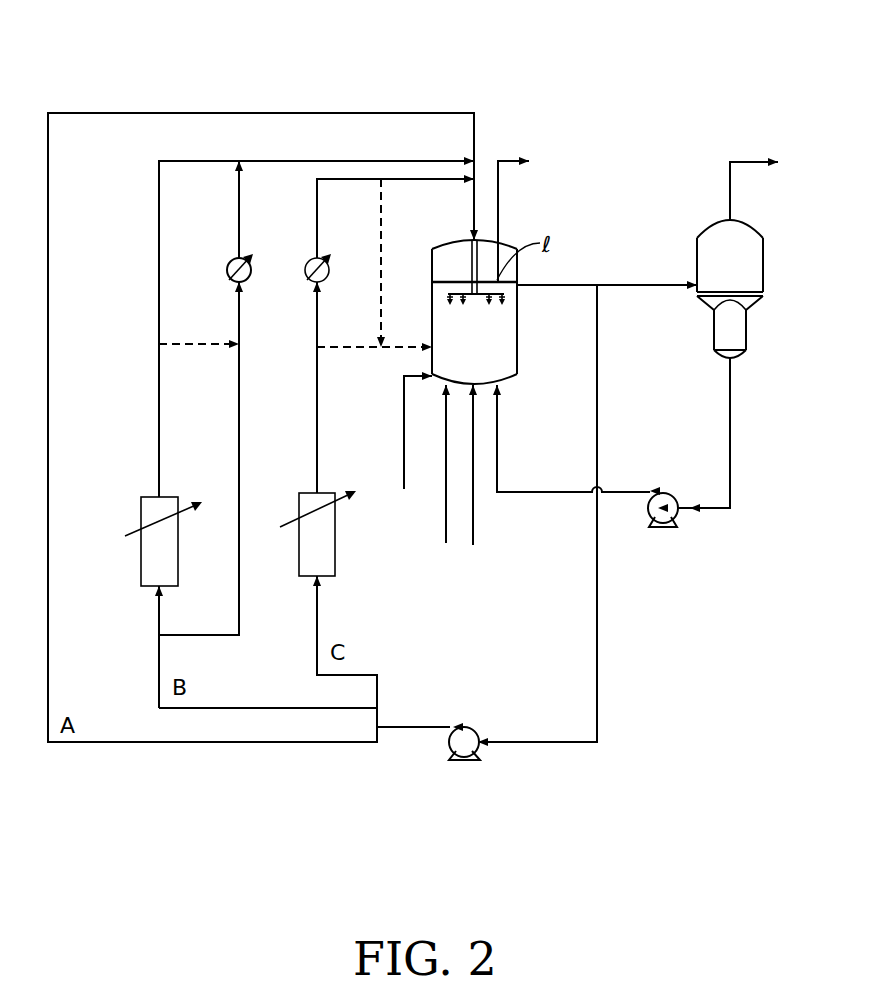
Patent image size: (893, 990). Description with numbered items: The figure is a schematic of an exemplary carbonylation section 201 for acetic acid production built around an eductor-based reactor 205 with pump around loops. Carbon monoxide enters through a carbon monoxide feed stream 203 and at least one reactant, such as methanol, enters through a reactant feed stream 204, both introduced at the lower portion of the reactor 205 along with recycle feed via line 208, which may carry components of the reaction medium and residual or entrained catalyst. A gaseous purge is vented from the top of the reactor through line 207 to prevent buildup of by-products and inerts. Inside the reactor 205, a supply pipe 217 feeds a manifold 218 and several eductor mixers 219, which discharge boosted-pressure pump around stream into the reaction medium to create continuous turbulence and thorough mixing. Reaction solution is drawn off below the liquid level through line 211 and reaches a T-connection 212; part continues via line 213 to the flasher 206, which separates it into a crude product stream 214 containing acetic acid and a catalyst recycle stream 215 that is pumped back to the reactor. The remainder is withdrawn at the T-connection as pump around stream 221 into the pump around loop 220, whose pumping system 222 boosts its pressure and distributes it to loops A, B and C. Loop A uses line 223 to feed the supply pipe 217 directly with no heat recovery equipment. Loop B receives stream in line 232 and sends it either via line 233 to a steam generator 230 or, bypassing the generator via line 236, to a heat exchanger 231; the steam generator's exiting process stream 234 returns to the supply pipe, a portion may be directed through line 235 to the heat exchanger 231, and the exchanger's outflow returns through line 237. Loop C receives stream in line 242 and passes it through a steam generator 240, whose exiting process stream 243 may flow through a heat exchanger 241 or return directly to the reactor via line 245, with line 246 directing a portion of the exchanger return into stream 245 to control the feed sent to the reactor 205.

The carbonylation section 201 is at (628, 115).
The carbon monoxide feed stream 203 is at (400, 520).
The reactant feed stream 204 is at (435, 575).
The eductor-based reactor 205 is at (505, 355).
The flasher 206 is at (752, 270).
The gaseous purge vent line 207 is at (498, 206).
The recycle feed stream line 208 is at (474, 530).
The reaction solution withdrawal line 211 is at (597, 283).
The T-connection 212 is at (600, 290).
The flasher feed line 213 is at (645, 283).
The crude product stream 214 is at (730, 190).
The catalyst recycle stream 215 is at (730, 428).
The supply pipe 217 is at (466, 265).
The manifold 218 is at (455, 292).
The eductor mixers 219 is at (449, 305).
The pump around loop 220 is at (539, 679).
The pump around stream line 221 is at (598, 638).
The pumping system 222 is at (467, 760).
The loop A line 223 is at (153, 742).
The steam generator 230 is at (160, 543).
The heat exchanger 231 is at (252, 270).
The loop B line 232 is at (242, 707).
The steam generator feed line 233 is at (159, 614).
The exiting process stream 234 is at (159, 300).
The heat exchanger bypass feed line 235 is at (196, 348).
The steam generator bypass line 236 is at (239, 452).
The heat exchanger outflow line 237 is at (239, 212).
The steam generator 240 is at (307, 558).
The heat exchanger 241 is at (305, 278).
The loop C line 242 is at (377, 688).
The exiting process stream 243 is at (317, 470).
The direct return line 245 is at (337, 352).
The control line 246 is at (381, 268).